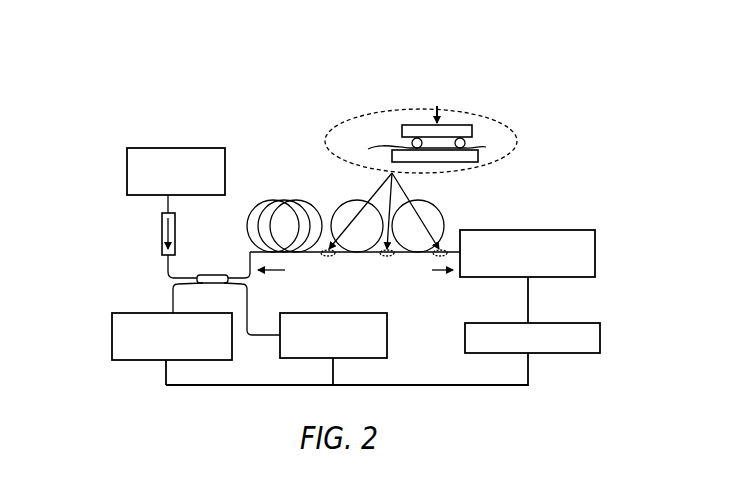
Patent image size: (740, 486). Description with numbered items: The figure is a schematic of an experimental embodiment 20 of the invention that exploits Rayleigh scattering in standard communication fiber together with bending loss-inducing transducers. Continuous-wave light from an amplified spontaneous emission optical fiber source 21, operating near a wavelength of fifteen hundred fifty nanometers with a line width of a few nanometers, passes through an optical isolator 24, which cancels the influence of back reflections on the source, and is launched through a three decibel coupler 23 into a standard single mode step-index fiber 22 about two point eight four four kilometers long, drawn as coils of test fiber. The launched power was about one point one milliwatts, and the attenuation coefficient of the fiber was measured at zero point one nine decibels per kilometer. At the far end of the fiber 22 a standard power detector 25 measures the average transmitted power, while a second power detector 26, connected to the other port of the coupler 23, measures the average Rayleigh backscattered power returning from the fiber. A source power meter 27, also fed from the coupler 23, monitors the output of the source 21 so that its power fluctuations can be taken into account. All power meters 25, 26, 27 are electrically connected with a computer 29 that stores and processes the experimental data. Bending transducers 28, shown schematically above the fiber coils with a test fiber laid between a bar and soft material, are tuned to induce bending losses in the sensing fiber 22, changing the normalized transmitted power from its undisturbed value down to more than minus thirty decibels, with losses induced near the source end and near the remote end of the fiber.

The experimental embodiment 20 is at (122, 121).
The amplified spontaneous emission (ASE) optical fiber source 21 is at (167, 160).
The standard single mode step-index fiber 22 is at (277, 202).
The 3 dB coupler 23 is at (207, 280).
The optical isolator 24 is at (160, 227).
The power detector 25 is at (518, 230).
The power detector 26 is at (113, 313).
The source power meter 27 is at (387, 334).
The bending transducer 28 is at (483, 123).
The computer 29 is at (575, 340).